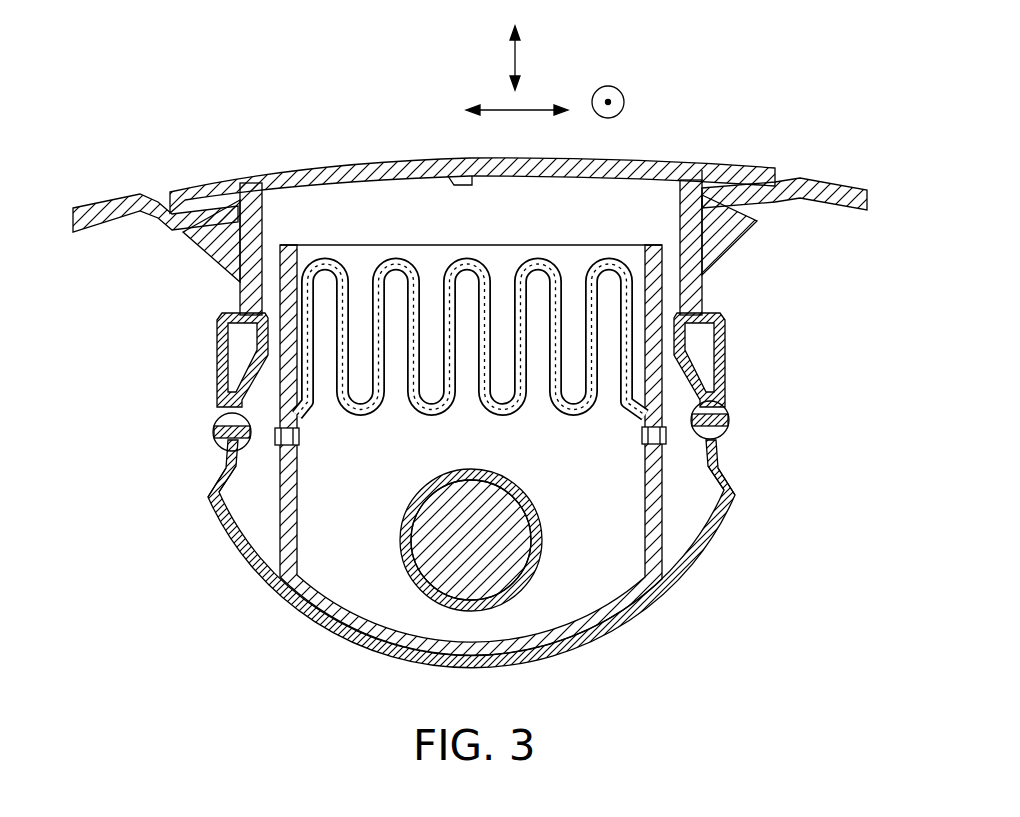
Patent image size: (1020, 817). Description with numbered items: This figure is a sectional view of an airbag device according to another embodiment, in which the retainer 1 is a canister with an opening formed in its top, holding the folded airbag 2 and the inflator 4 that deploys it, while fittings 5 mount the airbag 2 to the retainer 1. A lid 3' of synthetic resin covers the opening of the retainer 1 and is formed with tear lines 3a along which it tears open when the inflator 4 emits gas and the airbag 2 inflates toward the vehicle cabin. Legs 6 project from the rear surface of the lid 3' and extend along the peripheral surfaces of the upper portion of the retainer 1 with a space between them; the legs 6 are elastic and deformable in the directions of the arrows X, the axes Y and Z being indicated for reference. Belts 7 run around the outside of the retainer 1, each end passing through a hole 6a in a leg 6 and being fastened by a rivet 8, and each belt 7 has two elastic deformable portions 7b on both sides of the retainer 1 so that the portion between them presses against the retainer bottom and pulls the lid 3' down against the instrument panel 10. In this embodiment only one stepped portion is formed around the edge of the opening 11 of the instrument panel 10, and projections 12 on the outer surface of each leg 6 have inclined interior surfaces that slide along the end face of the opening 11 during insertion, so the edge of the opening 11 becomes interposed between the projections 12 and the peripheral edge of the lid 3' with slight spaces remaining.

The retainer 1 is at (672, 508).
The airbag 2 is at (522, 410).
The lid 3' is at (472, 149).
The tear lines 3a is at (462, 174).
The inflator 4 is at (546, 540).
The fittings 5 is at (310, 438).
The legs 6 is at (264, 214).
The holes 6a is at (240, 304).
The belts 7 is at (722, 452).
The elastic deformable portions 7b is at (735, 483).
The rivet 8 is at (213, 432).
The instrument panel 10 is at (833, 181).
The opening 11 is at (702, 168).
The projections 12 is at (188, 234).
The arrows X is at (522, 108).
The Y axis Y is at (624, 96).
The Z axis Z is at (519, 56).